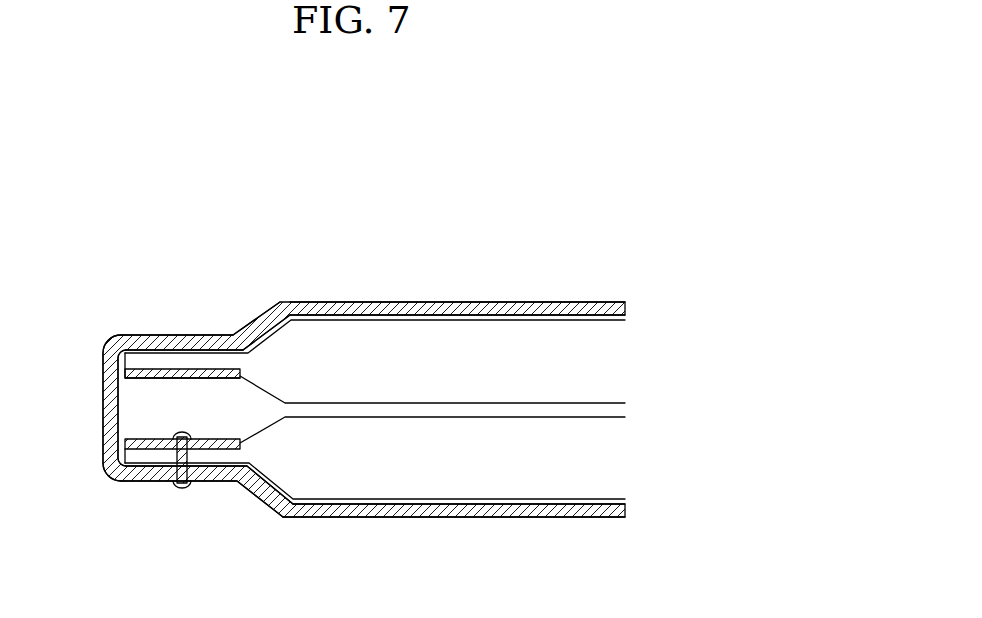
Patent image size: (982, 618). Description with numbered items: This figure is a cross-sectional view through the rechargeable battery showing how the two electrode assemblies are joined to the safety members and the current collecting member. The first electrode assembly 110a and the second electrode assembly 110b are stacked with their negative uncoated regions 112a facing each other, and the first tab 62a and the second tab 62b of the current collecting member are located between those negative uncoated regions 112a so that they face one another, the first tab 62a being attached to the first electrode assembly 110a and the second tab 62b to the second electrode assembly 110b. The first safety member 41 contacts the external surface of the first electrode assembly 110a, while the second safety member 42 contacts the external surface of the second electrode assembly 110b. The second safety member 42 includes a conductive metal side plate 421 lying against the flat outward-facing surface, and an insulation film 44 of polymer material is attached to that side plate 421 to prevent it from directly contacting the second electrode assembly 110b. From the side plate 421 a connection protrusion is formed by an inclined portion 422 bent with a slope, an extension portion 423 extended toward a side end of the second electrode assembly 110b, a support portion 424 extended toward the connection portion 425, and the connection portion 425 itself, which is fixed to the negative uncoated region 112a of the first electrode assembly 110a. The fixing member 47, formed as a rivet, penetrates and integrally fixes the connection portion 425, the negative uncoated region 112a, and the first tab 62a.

The first safety member 41 is at (485, 517).
The second safety member 42 is at (325, 401).
The side plate 421 is at (335, 302).
The inclined portion 422 is at (253, 322).
The extension portion 423 is at (216, 335).
The support portion 424 is at (103, 383).
The connection portion 425 is at (133, 482).
The insulation film 44 is at (546, 322).
The fixing member 47 is at (207, 483).
The first tab 62a is at (145, 438).
The second tab 62b is at (157, 380).
The negative uncoated region 112a is at (178, 366).
The first electrode assembly 110a is at (412, 484).
The second electrode assembly 110b is at (413, 338).